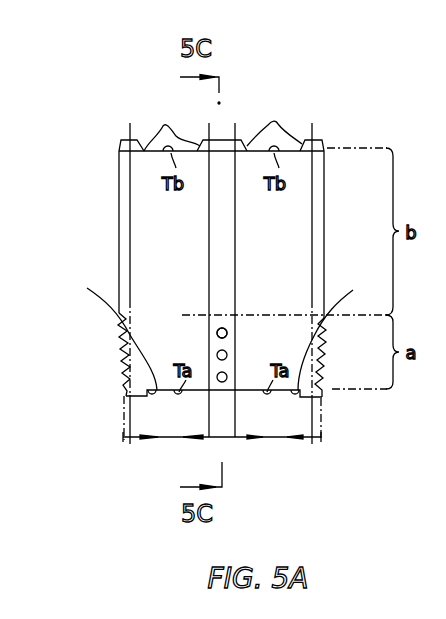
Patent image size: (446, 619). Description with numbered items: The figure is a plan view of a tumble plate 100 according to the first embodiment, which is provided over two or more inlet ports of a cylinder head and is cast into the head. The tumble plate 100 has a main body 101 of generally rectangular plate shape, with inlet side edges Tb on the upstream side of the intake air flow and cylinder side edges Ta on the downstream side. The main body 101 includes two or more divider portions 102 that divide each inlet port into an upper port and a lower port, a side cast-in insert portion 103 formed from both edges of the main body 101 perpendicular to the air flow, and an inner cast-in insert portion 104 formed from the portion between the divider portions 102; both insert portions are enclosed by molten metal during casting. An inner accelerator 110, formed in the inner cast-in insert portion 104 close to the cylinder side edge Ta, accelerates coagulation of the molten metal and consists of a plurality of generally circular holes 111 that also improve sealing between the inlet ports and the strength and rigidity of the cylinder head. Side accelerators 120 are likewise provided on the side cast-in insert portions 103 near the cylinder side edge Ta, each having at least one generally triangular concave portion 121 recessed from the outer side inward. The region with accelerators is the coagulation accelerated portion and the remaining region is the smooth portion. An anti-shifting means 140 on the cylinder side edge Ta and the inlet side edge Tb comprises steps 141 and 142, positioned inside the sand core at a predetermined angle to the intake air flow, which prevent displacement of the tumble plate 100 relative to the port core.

The tumble plate 100 is at (79, 46).
The main body 101 is at (152, 208).
The divider portions 102 is at (167, 440).
The side cast-in insert portion 103 is at (125, 442).
The inner cast-in insert portion 104 is at (227, 442).
The inner accelerator 110 is at (212, 350).
The holes 111 is at (229, 333).
The side accelerators 120 is at (120, 357).
The concave portion 121 is at (126, 373).
The anti-shifting means 140 is at (292, 86).
The step 141 is at (217, 328).
The step 142 is at (223, 124).